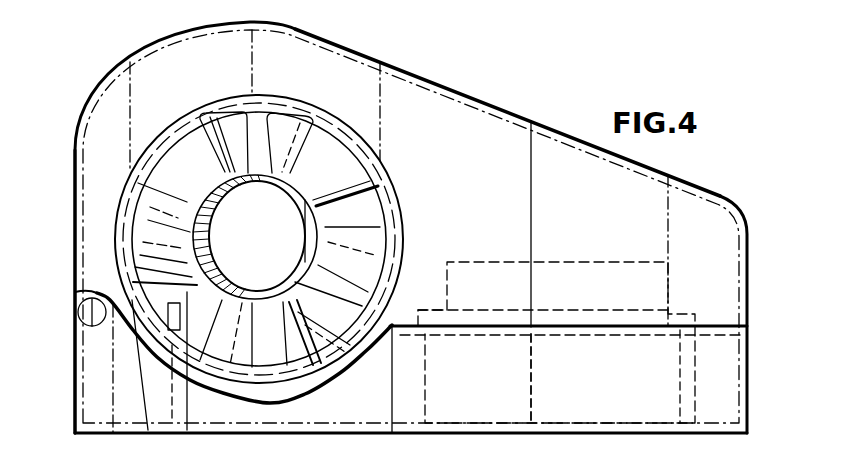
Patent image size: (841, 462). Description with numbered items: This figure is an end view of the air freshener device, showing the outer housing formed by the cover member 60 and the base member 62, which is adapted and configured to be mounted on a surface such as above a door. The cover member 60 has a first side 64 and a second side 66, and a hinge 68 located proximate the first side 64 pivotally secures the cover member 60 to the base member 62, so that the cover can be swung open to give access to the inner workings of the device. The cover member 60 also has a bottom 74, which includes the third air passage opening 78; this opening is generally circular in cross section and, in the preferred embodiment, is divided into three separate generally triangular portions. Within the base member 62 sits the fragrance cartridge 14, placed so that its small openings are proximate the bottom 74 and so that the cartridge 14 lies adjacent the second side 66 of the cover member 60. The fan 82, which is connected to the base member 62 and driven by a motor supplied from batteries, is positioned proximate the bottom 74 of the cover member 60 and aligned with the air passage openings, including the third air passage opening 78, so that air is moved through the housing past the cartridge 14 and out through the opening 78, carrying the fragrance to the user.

The cartridge 14 is at (586, 270).
The cover member 60 is at (467, 96).
The base member 62 is at (723, 388).
The first side 64 is at (75, 192).
The second side 66 is at (749, 256).
The hinge 68 is at (79, 320).
The bottom 74 is at (467, 202).
The third air passage opening 78 is at (298, 346).
The fan 82 is at (143, 237).